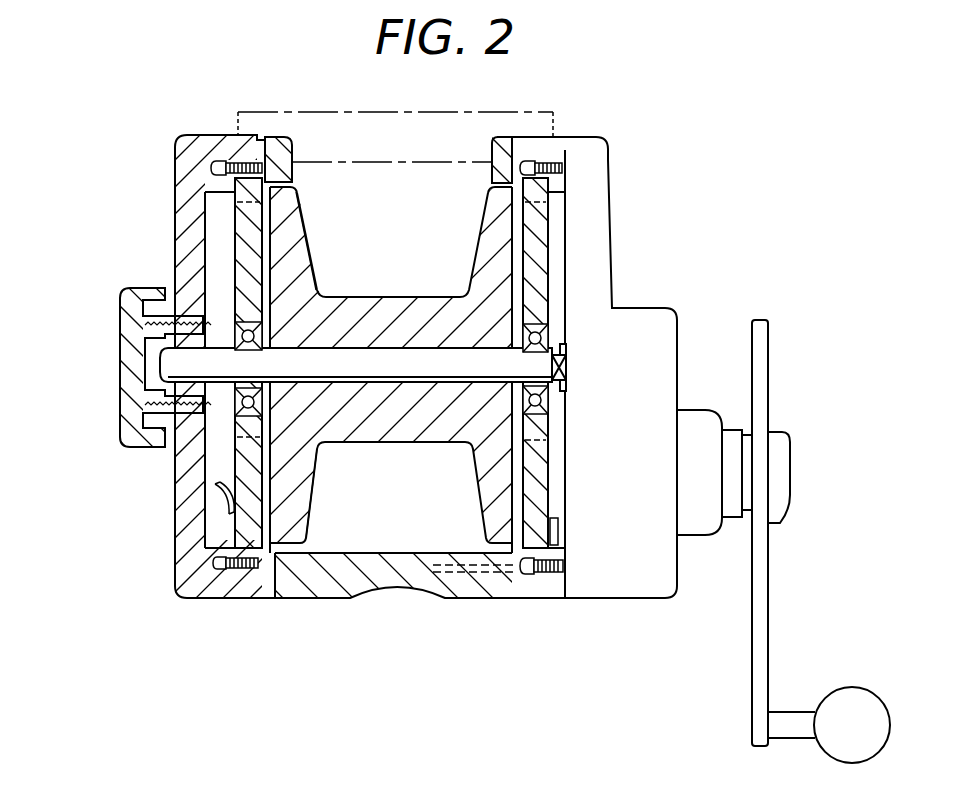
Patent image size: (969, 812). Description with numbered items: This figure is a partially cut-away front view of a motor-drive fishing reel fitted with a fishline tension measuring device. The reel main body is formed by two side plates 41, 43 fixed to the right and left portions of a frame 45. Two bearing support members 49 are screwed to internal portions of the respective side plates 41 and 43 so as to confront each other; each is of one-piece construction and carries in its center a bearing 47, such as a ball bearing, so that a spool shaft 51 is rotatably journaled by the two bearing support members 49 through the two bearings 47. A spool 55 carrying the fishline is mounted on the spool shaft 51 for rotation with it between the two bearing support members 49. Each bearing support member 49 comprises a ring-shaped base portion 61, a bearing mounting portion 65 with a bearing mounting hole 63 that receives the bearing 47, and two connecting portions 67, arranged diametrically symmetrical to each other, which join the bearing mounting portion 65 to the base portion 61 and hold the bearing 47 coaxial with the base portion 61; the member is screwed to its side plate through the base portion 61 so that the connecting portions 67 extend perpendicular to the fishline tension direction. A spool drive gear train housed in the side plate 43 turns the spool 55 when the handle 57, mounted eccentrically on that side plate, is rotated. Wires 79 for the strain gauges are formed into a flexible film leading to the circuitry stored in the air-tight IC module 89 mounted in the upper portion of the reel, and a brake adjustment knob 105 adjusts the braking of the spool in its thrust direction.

The side plate 41 is at (183, 545).
The side plate 43 is at (593, 197).
The frame 45 is at (307, 588).
The bearing 47 is at (233, 408).
The bearing support member 49 is at (228, 232).
The spool shaft 51 is at (382, 350).
The spool 55 is at (300, 477).
The handle 57 is at (760, 648).
The base portion 61 is at (217, 162).
The bearing mounting hole 63 is at (250, 322).
The bearing mounting portion 65 is at (267, 413).
The connecting portion 67 is at (235, 210).
The wires 79 is at (215, 497).
The IC module 89 is at (314, 128).
The brake adjustment knob 105 is at (120, 350).